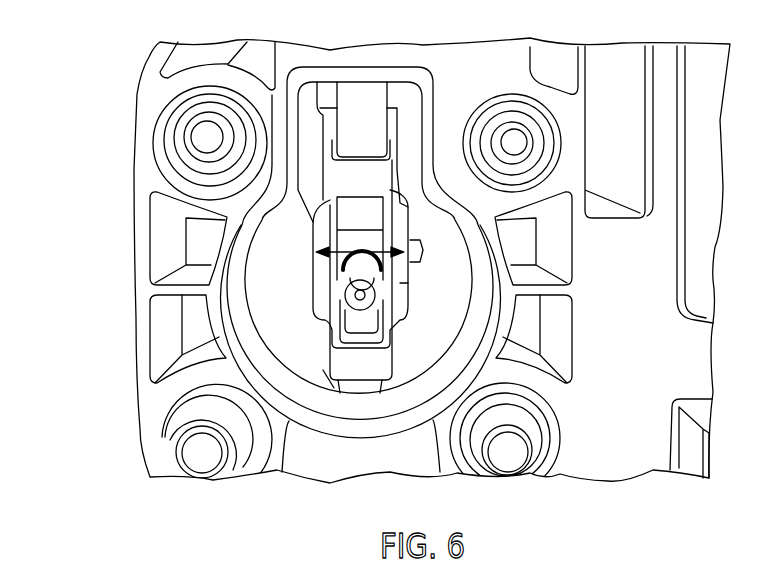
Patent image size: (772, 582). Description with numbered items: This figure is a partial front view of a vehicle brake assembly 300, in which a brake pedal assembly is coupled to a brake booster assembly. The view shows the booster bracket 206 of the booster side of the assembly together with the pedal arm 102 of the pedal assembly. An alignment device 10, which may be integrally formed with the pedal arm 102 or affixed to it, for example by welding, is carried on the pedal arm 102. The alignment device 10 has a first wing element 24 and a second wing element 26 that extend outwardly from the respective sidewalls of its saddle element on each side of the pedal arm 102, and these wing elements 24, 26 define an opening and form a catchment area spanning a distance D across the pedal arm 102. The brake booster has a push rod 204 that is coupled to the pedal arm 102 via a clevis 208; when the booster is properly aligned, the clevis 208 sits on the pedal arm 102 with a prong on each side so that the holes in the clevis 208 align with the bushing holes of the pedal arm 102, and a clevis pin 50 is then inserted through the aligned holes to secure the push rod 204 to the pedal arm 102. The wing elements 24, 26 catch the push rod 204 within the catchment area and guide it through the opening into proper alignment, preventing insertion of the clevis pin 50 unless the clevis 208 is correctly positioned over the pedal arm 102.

The vehicle brake assembly 300 is at (86, 119).
The booster bracket 206 is at (137, 172).
The pedal arm 102 is at (367, 97).
The alignment device 10 is at (388, 178).
The clevis pin 50 is at (421, 245).
The clevis 208 is at (342, 242).
The second wing element 26 is at (312, 262).
The distance D is at (340, 263).
The first wing element 24 is at (403, 283).
The push rod 204 is at (353, 295).